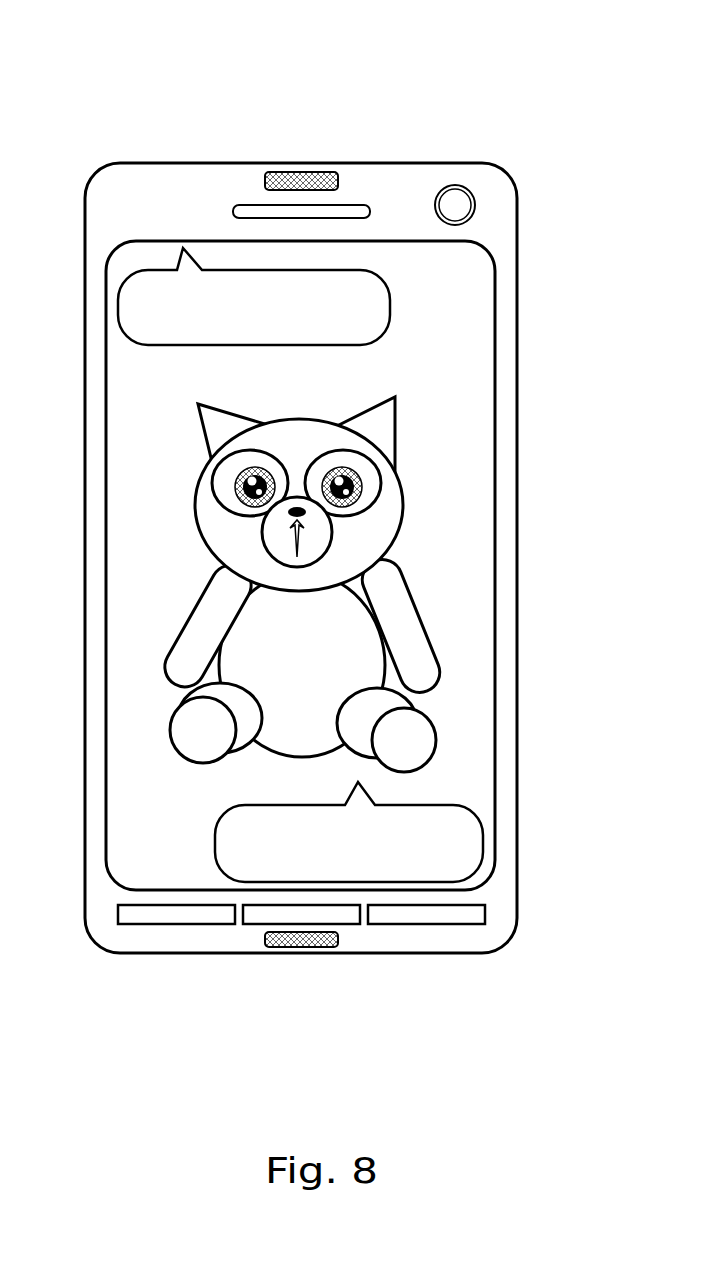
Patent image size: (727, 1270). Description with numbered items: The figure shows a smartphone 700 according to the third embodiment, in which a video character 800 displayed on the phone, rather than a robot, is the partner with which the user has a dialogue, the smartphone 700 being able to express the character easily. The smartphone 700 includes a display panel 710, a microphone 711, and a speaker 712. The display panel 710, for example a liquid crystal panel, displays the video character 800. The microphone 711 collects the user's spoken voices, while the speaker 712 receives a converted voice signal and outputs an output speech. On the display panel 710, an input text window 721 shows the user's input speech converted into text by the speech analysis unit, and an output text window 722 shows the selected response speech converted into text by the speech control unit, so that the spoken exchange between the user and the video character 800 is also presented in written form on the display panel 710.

The smartphone 700 is at (86, 41).
The display panel 710 is at (497, 349).
The microphone 711 is at (288, 950).
The speaker 712 is at (332, 170).
The input text window 721 is at (120, 292).
The output text window 722 is at (483, 832).
The video character 800 is at (438, 462).